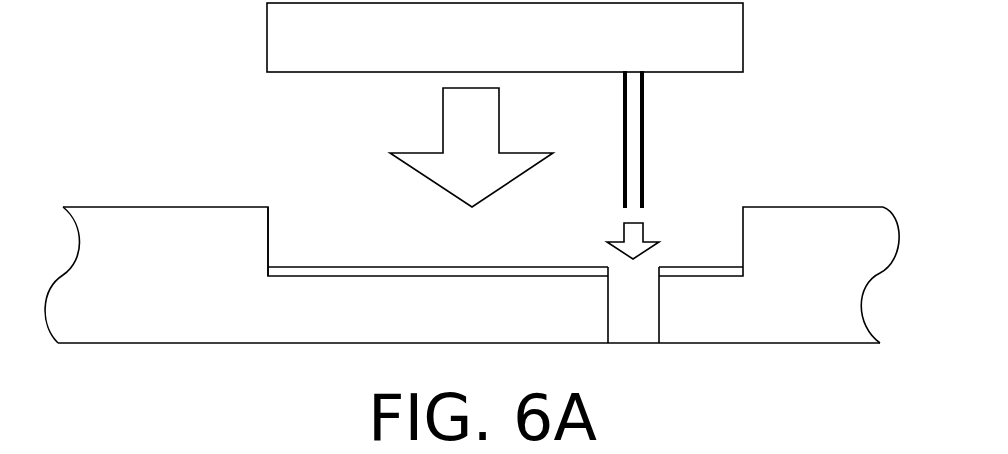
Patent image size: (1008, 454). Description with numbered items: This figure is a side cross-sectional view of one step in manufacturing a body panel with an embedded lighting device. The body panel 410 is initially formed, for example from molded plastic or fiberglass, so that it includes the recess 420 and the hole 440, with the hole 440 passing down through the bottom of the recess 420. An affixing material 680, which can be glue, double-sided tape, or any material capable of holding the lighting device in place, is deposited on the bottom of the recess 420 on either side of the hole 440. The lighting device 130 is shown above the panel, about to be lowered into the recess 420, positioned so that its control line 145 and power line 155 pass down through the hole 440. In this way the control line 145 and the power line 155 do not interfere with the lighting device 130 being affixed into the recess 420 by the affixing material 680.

The lighting device 130 is at (267, 37).
The power line 155 is at (623, 122).
The control line 145 is at (644, 122).
The substrate 410 is at (112, 344).
The recess 420 is at (274, 222).
The hole 440 is at (660, 307).
The affixing material 680 is at (331, 274).